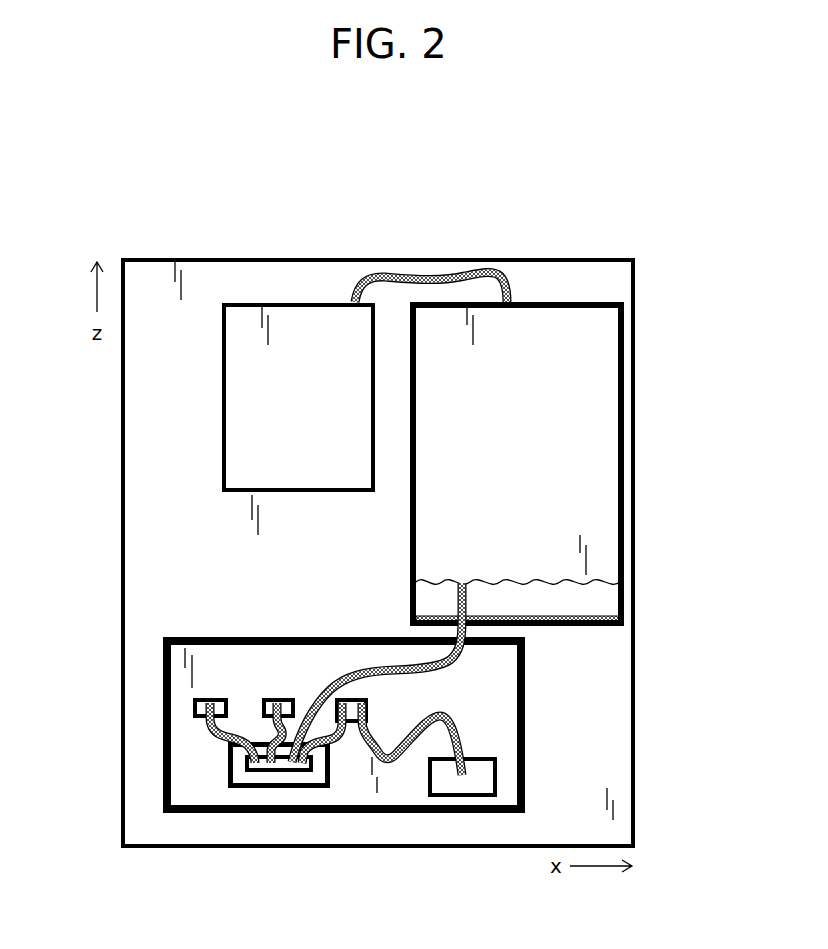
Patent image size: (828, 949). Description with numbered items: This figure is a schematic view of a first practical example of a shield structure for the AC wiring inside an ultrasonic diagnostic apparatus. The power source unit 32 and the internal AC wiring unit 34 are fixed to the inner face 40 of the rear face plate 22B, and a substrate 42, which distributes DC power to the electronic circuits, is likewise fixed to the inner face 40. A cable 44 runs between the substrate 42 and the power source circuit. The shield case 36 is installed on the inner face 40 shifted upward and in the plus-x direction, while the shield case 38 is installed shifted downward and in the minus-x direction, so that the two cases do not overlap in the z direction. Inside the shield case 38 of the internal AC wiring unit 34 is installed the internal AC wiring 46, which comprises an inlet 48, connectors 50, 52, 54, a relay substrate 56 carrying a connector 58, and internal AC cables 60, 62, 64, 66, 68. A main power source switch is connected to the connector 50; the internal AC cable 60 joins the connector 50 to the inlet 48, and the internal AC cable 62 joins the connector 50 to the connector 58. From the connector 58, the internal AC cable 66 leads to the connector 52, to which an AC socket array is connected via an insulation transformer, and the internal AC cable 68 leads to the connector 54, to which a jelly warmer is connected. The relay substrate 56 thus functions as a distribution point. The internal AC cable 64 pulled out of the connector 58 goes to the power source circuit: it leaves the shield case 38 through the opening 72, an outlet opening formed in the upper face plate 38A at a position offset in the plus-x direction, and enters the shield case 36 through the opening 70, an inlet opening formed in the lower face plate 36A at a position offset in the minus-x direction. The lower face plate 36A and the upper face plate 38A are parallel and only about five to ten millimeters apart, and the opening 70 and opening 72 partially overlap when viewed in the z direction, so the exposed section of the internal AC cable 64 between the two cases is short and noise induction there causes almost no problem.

The rear face plate 22B is at (356, 258).
The power source unit 32 is at (532, 292).
The internal AC wiring unit 34 is at (150, 713).
The shield case 36 is at (627, 528).
The lower face plate 36A is at (590, 618).
The shield case 38 is at (523, 727).
The upper face plate 38A is at (372, 637).
The inner face 40 is at (613, 286).
The substrate 42 is at (296, 300).
The cable 44 is at (430, 273).
The internal AC wiring 46 is at (275, 661).
The inlet 48 is at (497, 772).
The connector 50 is at (373, 700).
The connector 52 is at (268, 700).
The connector 54 is at (200, 720).
The relay substrate 56 is at (228, 765).
The connector 58 is at (280, 773).
The internal AC cable 60 is at (388, 760).
The internal AC cable 62 is at (330, 745).
The internal AC cable 64 is at (343, 664).
The internal AC cable 66 is at (265, 770).
The internal AC cable 68 is at (250, 752).
The opening 70 is at (497, 618).
The opening 72 is at (467, 647).